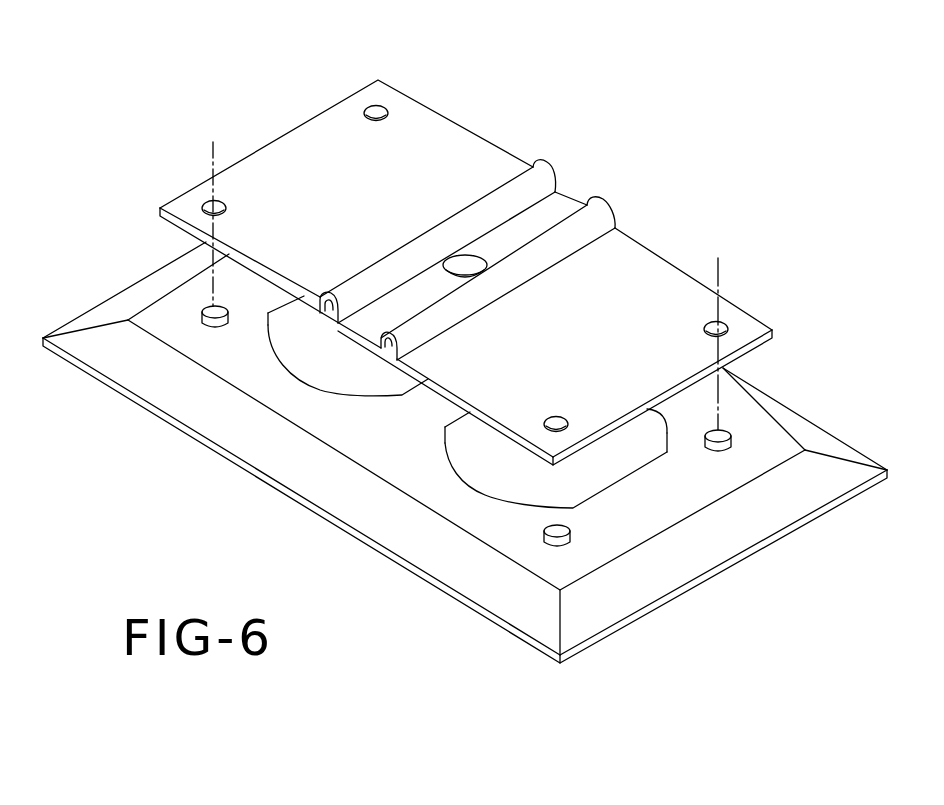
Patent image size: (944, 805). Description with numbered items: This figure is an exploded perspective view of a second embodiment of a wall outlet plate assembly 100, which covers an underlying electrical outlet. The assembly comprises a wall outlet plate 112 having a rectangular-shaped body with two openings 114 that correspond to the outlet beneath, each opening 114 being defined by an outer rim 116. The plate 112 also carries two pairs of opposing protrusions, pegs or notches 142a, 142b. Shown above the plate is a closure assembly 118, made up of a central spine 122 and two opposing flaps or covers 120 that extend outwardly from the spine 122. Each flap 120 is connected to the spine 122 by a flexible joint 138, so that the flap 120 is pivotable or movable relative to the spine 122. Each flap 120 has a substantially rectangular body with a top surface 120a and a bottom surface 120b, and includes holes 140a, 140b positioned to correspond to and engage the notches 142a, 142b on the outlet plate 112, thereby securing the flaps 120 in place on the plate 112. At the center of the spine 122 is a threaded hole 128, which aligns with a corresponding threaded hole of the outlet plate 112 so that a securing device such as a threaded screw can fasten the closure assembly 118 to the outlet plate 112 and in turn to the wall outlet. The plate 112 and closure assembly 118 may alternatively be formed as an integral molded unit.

The wall outlet plate assembly 100 is at (733, 153).
The wall outlet plate 112 is at (752, 402).
The opening 114 is at (350, 377).
The outer rim 116 is at (462, 424).
The closure assembly 118 is at (279, 137).
The flap 120 is at (418, 157).
The top surface 120a is at (743, 335).
The bottom surface 120b is at (495, 425).
The central spine 122 is at (558, 213).
The threaded hole 128 is at (472, 257).
The flexible joint 138 is at (533, 181).
The hole 140a is at (713, 322).
The hole 140b is at (210, 202).
The notch 142a is at (547, 540).
The notch 142b is at (208, 326).